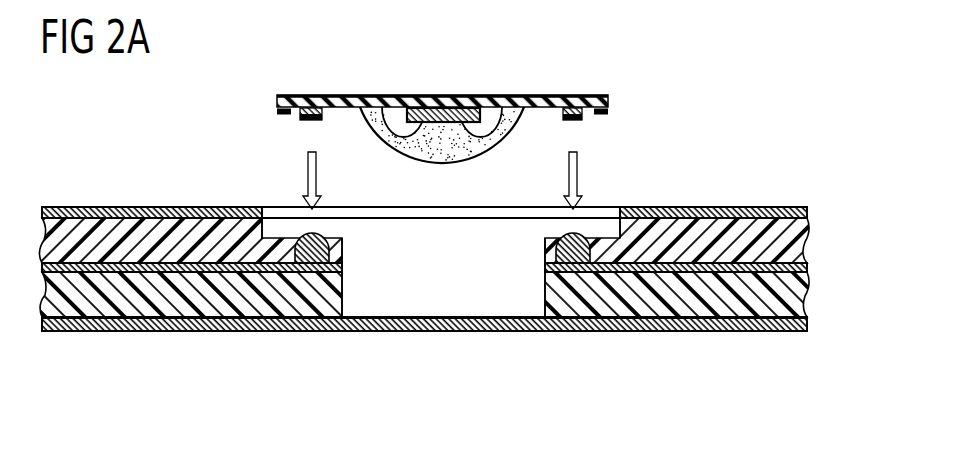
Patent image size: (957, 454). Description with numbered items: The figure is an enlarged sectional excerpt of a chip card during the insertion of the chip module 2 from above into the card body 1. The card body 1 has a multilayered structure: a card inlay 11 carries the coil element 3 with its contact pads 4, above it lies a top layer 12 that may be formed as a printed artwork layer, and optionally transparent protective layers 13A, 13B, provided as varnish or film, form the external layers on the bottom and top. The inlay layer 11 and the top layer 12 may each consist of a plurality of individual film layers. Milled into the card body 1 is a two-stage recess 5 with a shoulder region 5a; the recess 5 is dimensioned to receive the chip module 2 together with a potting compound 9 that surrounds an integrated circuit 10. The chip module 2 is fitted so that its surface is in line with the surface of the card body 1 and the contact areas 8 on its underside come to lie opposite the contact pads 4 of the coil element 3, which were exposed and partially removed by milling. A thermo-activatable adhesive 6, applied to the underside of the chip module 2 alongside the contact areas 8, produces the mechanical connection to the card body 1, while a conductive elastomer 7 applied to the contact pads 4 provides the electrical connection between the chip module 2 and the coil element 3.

The card body 1 is at (460, 295).
The chip module 2 is at (608, 100).
The coil element 3 is at (808, 267).
The contact pads 4 is at (314, 264).
The two-stage recess 5 is at (444, 296).
The shoulder region 5a is at (598, 216).
The thermo-activatable adhesive 6 is at (284, 112).
The conductive elastomer 7 is at (290, 210).
The contact areas 8 is at (305, 113).
The potting compound 9 is at (413, 150).
The integrated circuit 10 is at (446, 118).
The card inlay 11 is at (808, 296).
The top layer 12 is at (808, 243).
The lower protective layer 13A is at (808, 328).
The upper protective layer 13B is at (808, 208).